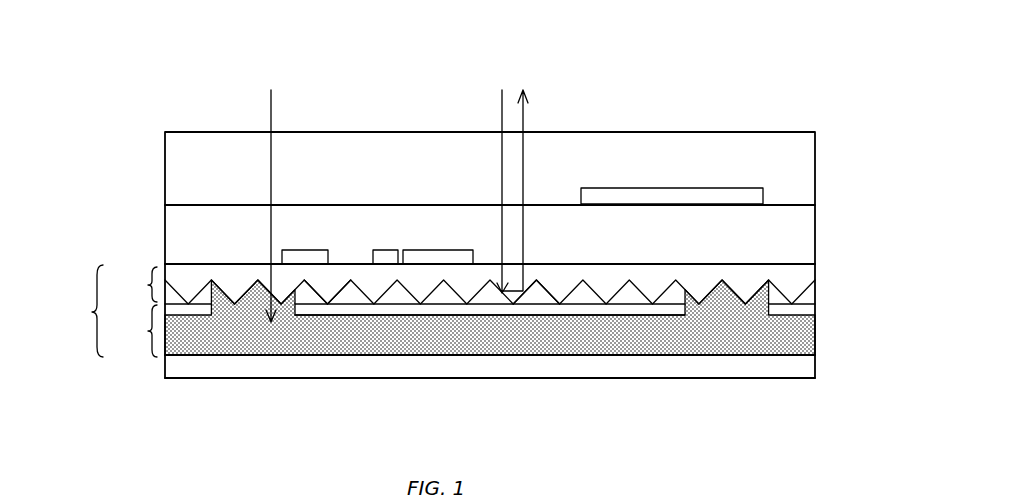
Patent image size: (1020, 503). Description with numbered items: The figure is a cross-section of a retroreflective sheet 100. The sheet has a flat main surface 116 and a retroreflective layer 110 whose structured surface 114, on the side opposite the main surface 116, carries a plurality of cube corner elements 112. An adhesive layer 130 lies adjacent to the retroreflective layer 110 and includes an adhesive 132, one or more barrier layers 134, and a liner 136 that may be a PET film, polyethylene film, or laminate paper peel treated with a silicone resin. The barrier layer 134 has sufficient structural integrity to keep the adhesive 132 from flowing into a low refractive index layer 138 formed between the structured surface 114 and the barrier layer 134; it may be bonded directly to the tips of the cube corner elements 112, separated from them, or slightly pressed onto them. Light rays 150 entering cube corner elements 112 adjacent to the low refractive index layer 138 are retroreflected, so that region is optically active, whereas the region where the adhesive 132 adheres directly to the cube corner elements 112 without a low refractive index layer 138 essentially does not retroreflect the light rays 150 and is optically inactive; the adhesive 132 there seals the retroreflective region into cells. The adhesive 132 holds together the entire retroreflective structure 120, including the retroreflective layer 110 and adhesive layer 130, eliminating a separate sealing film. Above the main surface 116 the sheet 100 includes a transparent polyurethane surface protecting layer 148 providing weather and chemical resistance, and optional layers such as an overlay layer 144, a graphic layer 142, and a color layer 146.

The retroreflective sheet 100 is at (767, 103).
The retroreflective layer 110 is at (458, 285).
The cube corner elements 112 is at (557, 270).
The structured surface 114 is at (338, 294).
The main surface 116 is at (347, 263).
The retroreflective structure 120 is at (75, 311).
The adhesive layer 130 is at (458, 318).
The adhesive 132 is at (800, 333).
The barrier layer 134 is at (633, 310).
The liner 136 is at (800, 368).
The low refractive index layer 138 is at (535, 297).
The graphic layer 142 is at (300, 258).
The overlay layer 144 is at (797, 237).
The color layer 146 is at (684, 198).
The polyurethane surface protecting layer 148 is at (797, 172).
The light rays 150 is at (271, 110).